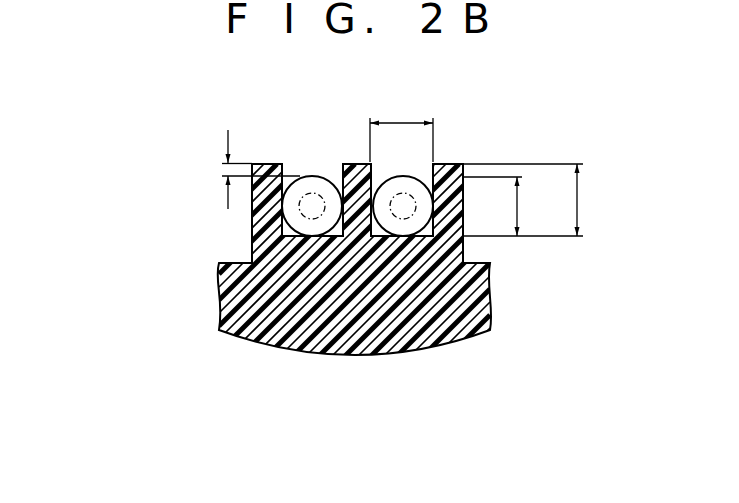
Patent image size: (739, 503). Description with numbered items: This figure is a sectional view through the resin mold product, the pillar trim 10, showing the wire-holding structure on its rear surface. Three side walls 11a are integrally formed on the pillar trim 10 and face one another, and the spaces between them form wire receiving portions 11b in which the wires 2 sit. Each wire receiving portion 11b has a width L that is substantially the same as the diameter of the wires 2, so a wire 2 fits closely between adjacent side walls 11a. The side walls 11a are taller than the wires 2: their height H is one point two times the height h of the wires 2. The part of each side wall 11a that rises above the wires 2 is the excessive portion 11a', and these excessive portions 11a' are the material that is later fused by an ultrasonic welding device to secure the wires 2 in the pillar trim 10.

The wires 2 is at (285, 205).
The pillar trim 10 is at (412, 352).
The side walls 11a is at (412, 152).
The excessive portions 11a' is at (196, 169).
The wire receiving portions 11b is at (281, 197).
The width L is at (401, 127).
The height h is at (501, 206).
The rib height dimension H is at (532, 200).